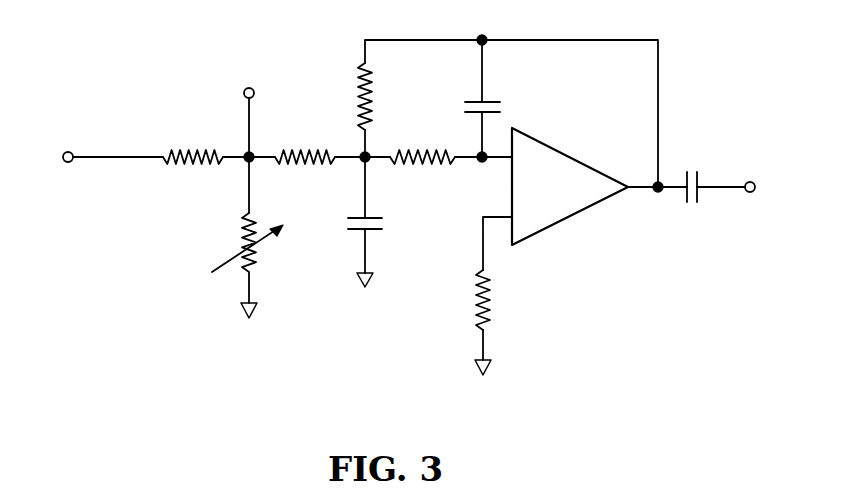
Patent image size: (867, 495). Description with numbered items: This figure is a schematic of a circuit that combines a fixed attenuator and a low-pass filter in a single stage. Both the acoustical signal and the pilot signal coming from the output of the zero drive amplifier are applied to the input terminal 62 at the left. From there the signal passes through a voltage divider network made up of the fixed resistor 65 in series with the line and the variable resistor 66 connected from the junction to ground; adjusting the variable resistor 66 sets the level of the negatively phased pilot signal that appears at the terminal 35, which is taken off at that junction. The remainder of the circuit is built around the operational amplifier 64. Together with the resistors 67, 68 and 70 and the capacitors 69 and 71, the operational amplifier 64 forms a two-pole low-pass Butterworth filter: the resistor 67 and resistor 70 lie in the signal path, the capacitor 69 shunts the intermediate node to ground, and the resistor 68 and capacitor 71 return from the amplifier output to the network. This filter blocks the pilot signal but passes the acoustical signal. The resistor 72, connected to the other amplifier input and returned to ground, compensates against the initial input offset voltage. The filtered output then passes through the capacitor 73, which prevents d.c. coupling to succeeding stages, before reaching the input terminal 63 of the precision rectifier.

The terminal 35 is at (252, 87).
The input terminal 62 is at (72, 150).
The input terminal of precision rectifier 63 is at (748, 181).
The operational amplifier 64 is at (560, 193).
The fixed resistor 65 is at (194, 162).
The variable resistor 66 is at (256, 256).
The resistor 67 is at (305, 148).
The resistor 68 is at (371, 103).
The capacitor 69 is at (370, 232).
The resistor 70 is at (430, 162).
The capacitor 71 is at (489, 100).
The resistor 72 is at (491, 300).
The capacitor 73 is at (702, 192).